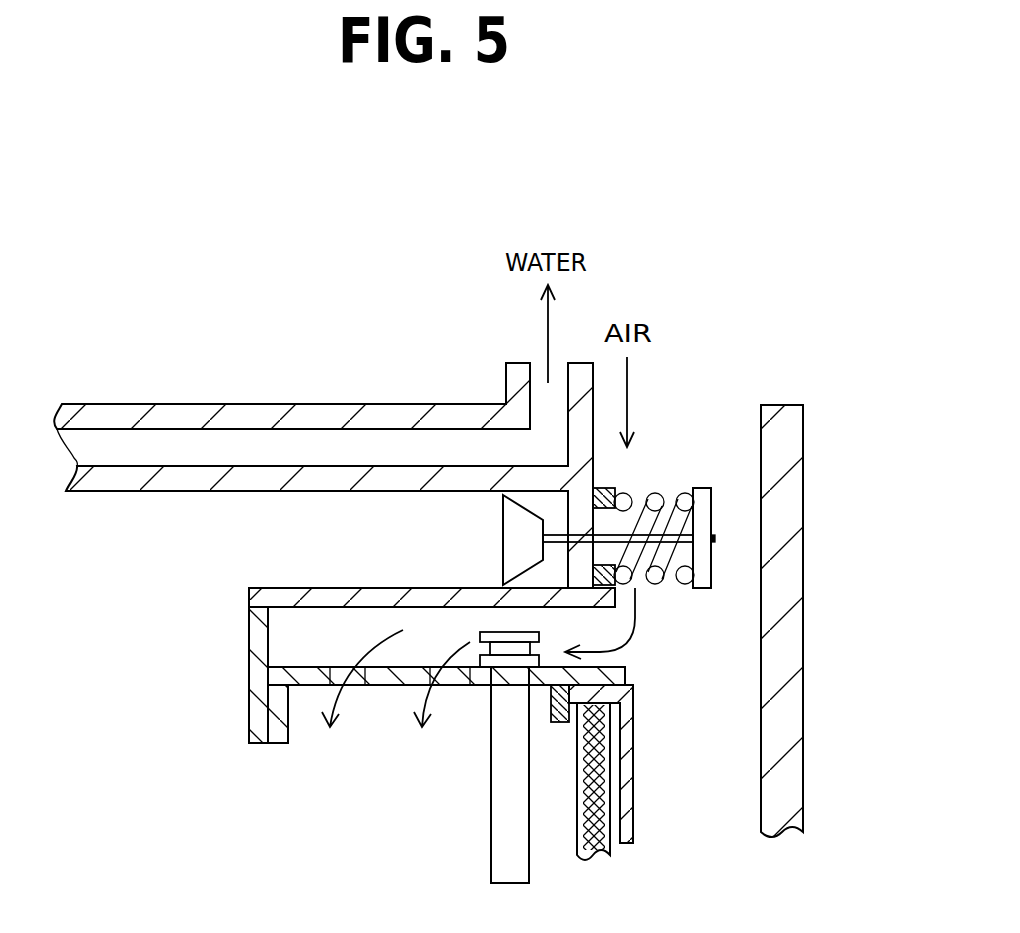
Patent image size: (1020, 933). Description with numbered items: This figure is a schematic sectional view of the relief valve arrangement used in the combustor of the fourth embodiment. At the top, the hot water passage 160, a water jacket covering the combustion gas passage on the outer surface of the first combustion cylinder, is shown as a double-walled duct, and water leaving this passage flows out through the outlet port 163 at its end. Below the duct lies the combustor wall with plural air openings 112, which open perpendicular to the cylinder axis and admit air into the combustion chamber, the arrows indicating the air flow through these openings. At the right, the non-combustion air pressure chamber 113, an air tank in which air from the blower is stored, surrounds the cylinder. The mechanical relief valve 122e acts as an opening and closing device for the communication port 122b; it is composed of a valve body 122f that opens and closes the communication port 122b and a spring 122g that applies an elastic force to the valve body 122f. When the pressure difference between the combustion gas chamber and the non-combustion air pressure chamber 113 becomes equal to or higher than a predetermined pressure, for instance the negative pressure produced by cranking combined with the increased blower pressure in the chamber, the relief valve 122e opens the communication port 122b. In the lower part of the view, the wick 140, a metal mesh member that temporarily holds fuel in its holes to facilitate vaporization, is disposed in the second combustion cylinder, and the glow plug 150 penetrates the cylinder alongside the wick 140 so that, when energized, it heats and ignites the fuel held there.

The hot water passage 160 is at (190, 450).
The air openings 112 is at (345, 667).
The valve body 122f is at (605, 522).
The communication port 122b is at (517, 532).
The outlet port 163 is at (540, 360).
The relief valve 122e is at (709, 474).
The spring 122g is at (655, 585).
The non-combustion air pressure chamber 113 is at (688, 693).
The glow plug 150 is at (505, 785).
The wick 140 is at (600, 808).